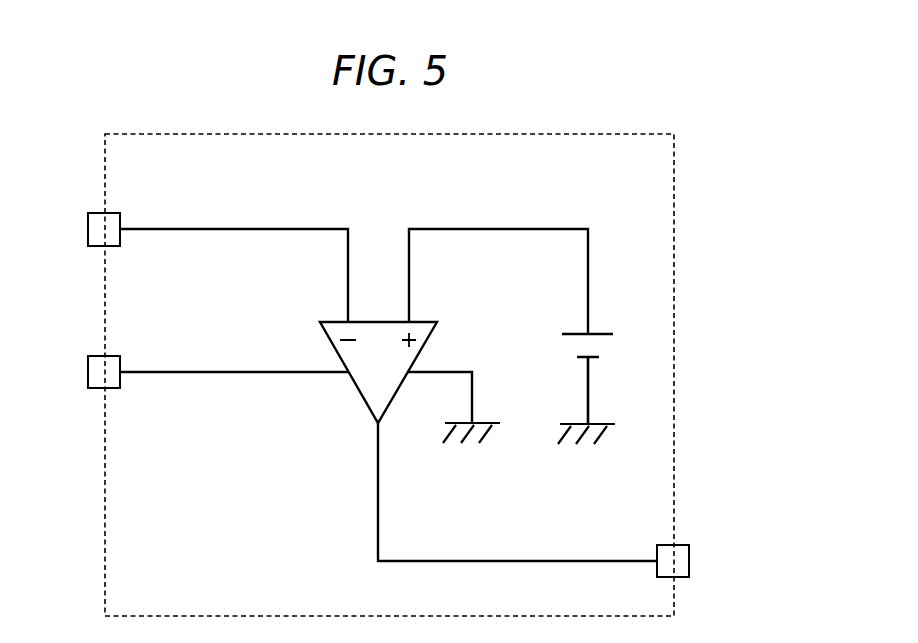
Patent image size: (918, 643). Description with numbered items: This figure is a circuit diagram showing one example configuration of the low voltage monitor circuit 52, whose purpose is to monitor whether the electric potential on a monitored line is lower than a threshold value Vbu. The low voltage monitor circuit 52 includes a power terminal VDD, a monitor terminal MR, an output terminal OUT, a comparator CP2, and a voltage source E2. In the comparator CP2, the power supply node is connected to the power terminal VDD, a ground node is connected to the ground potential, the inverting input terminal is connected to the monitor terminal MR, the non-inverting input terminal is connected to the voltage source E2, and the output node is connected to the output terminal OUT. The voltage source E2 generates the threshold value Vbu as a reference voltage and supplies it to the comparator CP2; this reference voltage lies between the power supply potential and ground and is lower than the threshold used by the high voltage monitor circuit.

The low voltage monitor circuit 52 is at (608, 118).
The comparator CP2 is at (342, 406).
The voltage source E2 is at (555, 362).
The threshold value Vbu is at (616, 380).
The monitor terminal MR is at (84, 215).
The power terminal VDD is at (77, 358).
The output terminal OUT is at (697, 547).